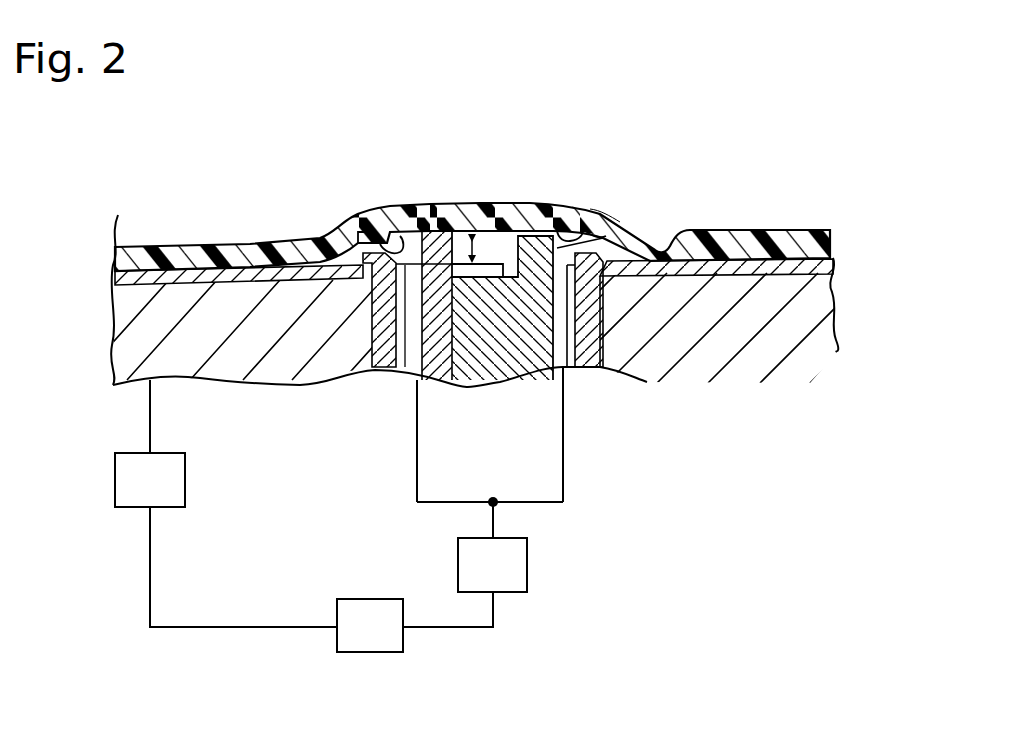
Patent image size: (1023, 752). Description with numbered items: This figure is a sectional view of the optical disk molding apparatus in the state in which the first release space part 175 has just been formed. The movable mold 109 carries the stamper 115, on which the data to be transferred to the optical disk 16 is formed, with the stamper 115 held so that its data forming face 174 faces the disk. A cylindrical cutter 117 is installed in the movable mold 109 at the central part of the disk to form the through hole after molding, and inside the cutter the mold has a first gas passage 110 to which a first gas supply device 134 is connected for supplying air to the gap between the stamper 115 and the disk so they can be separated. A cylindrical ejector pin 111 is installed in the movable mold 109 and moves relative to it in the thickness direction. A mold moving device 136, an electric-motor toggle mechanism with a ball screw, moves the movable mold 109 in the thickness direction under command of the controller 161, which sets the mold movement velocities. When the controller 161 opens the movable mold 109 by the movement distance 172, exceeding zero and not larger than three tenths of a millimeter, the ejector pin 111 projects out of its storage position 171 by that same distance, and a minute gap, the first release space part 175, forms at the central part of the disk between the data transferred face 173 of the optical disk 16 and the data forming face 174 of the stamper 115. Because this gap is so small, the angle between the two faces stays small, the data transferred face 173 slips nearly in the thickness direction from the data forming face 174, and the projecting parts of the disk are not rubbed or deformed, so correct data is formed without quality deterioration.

The optical disk 16 is at (598, 213).
The movable mold 109 is at (270, 380).
The first gas passage 110 is at (560, 332).
The cylindrical ejector pin 111 is at (438, 370).
The stamper 115 is at (830, 285).
The cylindrical cutter 117 is at (374, 364).
The first gas supply device 134 is at (527, 565).
The mold moving device 136 is at (115, 485).
The controller 161 is at (368, 652).
The storage position 171 is at (482, 263).
The movement distance 172 is at (466, 250).
The data transferred face 173 is at (583, 230).
The data forming face 174 is at (687, 228).
The first release space part 175 is at (398, 250).